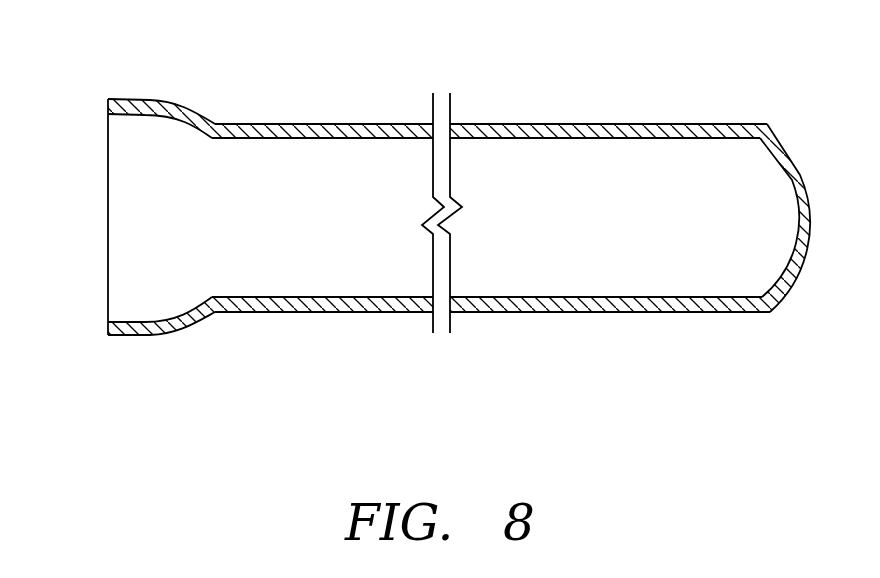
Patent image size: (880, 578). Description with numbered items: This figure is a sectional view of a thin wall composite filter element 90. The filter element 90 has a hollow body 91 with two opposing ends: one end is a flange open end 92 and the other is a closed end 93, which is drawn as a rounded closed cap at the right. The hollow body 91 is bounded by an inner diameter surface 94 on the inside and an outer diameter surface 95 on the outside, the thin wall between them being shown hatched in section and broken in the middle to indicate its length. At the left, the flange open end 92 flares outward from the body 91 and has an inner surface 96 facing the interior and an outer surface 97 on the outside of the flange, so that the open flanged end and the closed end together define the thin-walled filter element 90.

The thin wall composite filter element 90 is at (690, 115).
The hollow body 91 is at (566, 116).
The flange open end 92 is at (108, 104).
The closed end 93 is at (806, 178).
The inner diameter surface 94 is at (245, 297).
The outer diameter surface 95 is at (335, 123).
The inner surface 96 is at (150, 322).
The outer surface 97 is at (152, 99).